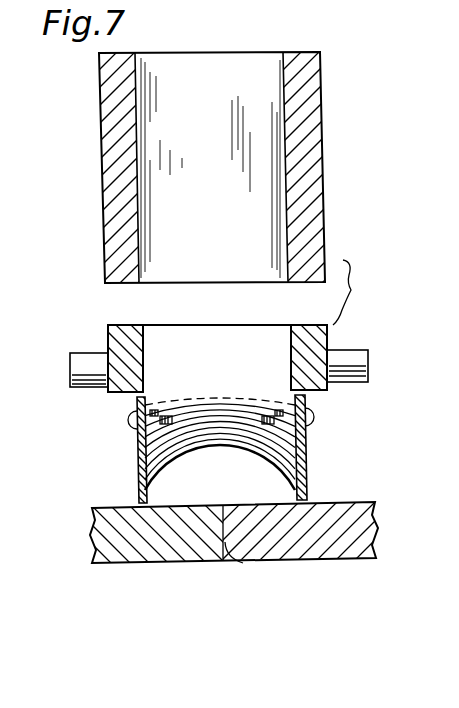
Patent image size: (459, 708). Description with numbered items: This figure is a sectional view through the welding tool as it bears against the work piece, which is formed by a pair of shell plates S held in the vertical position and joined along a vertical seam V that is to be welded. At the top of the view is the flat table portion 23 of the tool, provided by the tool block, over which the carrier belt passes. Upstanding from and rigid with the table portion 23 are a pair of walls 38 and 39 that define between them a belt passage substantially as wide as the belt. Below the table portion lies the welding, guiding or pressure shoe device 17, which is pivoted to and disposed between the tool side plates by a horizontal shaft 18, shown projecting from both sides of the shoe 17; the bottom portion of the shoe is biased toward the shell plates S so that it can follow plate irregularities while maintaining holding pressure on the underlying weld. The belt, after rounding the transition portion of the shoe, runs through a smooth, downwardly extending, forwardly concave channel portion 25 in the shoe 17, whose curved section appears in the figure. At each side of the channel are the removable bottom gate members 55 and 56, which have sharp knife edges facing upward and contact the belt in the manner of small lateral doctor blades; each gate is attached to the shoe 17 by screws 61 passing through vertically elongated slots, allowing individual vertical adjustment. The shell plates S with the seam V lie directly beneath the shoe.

The welding shoe device 17 is at (233, 300).
The horizontal shaft 18 is at (83, 353).
The flat table portion 23 is at (222, 168).
The channel portion 25 is at (232, 481).
The wall 38 is at (322, 136).
The wall 39 is at (101, 130).
The bottom gate member 55 is at (138, 466).
The bottom gate member 56 is at (306, 455).
The screws 61 is at (128, 422).
The shell plates S is at (102, 537).
The vertical seam V is at (240, 560).